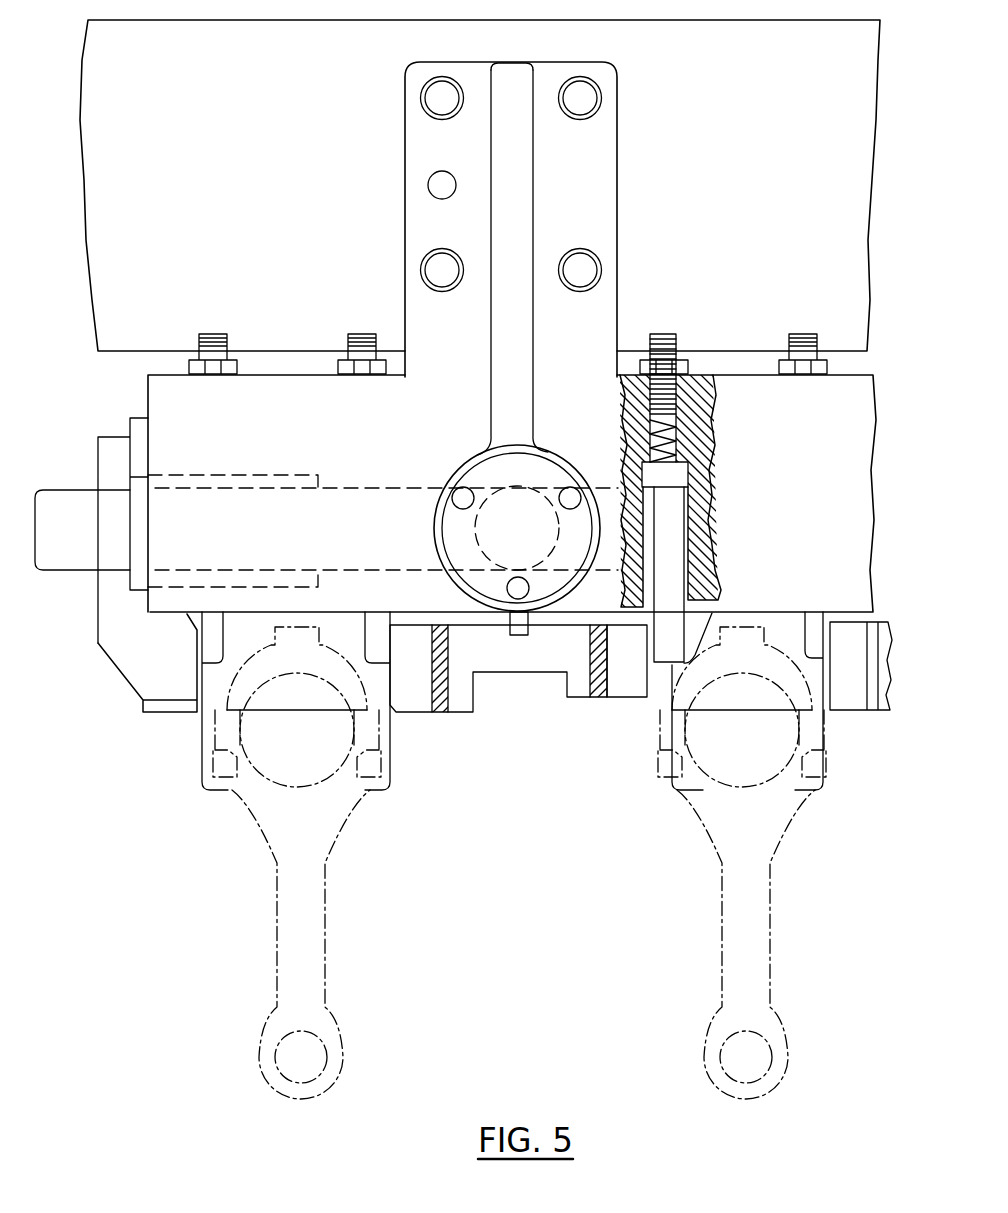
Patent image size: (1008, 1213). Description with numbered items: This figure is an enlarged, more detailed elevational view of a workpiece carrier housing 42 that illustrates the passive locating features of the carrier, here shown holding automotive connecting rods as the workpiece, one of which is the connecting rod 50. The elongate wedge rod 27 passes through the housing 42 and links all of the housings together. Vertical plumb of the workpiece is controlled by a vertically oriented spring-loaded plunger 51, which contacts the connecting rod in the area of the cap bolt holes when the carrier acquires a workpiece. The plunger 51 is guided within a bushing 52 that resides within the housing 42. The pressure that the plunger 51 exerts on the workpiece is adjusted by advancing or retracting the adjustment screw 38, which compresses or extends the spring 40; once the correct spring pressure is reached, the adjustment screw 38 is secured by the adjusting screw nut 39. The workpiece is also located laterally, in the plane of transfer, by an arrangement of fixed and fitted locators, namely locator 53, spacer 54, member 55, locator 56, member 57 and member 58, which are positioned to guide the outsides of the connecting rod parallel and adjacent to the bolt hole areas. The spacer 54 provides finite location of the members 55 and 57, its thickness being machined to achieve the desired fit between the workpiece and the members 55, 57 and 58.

The wedge rod 27 is at (60, 557).
The adjustment screw 38 is at (668, 334).
The adjusting screw nut 39 is at (683, 351).
The spring 40 is at (700, 418).
The housing 42 is at (606, 165).
The connecting rod 50 is at (313, 910).
The plunger 51 is at (687, 479).
The bushing 52 is at (695, 524).
The locator 53 is at (468, 712).
The spacer 54 is at (438, 712).
The member 55 is at (418, 713).
The locator 56 is at (600, 697).
The member 57 is at (630, 697).
The member 58 is at (152, 713).